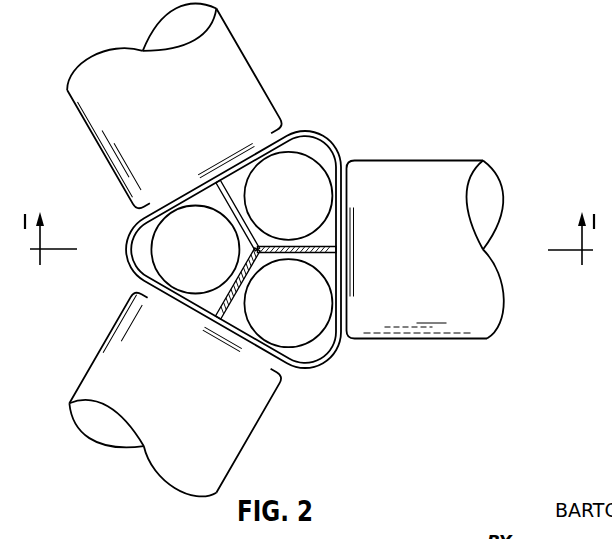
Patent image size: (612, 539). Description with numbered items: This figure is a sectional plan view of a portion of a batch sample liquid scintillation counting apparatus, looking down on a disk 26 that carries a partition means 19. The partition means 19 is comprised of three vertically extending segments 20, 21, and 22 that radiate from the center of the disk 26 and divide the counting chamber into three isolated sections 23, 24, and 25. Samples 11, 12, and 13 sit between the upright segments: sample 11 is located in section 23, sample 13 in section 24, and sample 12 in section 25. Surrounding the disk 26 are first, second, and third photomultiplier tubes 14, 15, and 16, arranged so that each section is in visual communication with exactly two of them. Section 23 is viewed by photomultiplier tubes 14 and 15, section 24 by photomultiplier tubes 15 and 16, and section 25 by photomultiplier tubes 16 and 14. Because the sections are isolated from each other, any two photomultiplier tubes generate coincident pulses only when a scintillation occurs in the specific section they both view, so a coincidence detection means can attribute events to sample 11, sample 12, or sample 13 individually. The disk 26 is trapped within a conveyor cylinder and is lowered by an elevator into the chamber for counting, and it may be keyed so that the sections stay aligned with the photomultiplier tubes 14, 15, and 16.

The sample 11 is at (182, 243).
The sample 12 is at (280, 210).
The sample 13 is at (277, 312).
The first photomultiplier tube 14 is at (160, 96).
The second photomultiplier tube 15 is at (156, 410).
The third photomultiplier tube 16 is at (410, 265).
The partition means 19 is at (230, 183).
The vertically extending segment 20 is at (208, 196).
The vertically extending segment 21 is at (228, 313).
The vertically extending segment 22 is at (322, 258).
The section 23 is at (207, 301).
The section 24 is at (307, 352).
The section 25 is at (328, 226).
The disk 26 is at (332, 355).